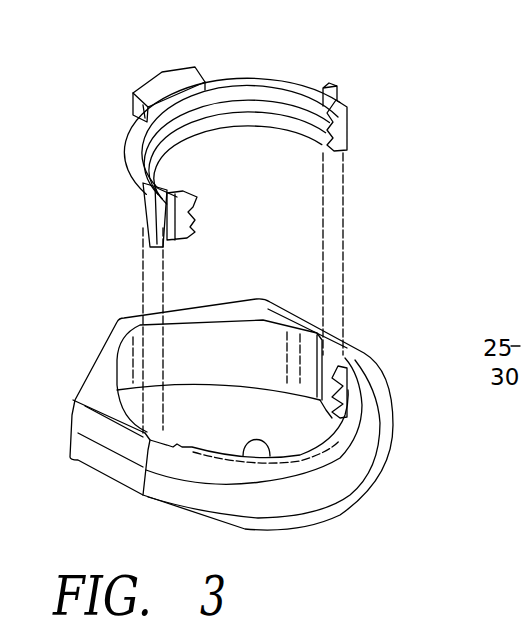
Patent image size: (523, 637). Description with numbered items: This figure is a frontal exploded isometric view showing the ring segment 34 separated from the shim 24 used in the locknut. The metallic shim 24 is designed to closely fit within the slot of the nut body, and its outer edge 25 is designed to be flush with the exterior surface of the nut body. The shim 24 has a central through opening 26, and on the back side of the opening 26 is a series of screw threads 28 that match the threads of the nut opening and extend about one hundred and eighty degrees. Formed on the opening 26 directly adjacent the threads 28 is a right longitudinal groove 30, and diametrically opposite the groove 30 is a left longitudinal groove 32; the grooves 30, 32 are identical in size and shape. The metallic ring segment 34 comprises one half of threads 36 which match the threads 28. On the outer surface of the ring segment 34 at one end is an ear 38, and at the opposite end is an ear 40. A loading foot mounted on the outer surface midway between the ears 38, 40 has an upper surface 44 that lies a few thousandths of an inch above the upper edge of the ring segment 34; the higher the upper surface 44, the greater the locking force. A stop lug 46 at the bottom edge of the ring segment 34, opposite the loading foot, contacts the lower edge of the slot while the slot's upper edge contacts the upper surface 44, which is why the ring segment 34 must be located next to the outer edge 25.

The shim 24 is at (370, 357).
The outer edge 25 is at (112, 330).
The central through opening 26 is at (270, 456).
The screw threads 28 is at (323, 422).
The right longitudinal groove 30 is at (73, 389).
The left longitudinal groove 32 is at (293, 357).
The ring segment 34 is at (345, 124).
The threads 36 is at (252, 105).
The ear 38 is at (150, 197).
The ear 40 is at (337, 83).
The upper surface 44 is at (133, 84).
The stop lug 46 is at (172, 162).